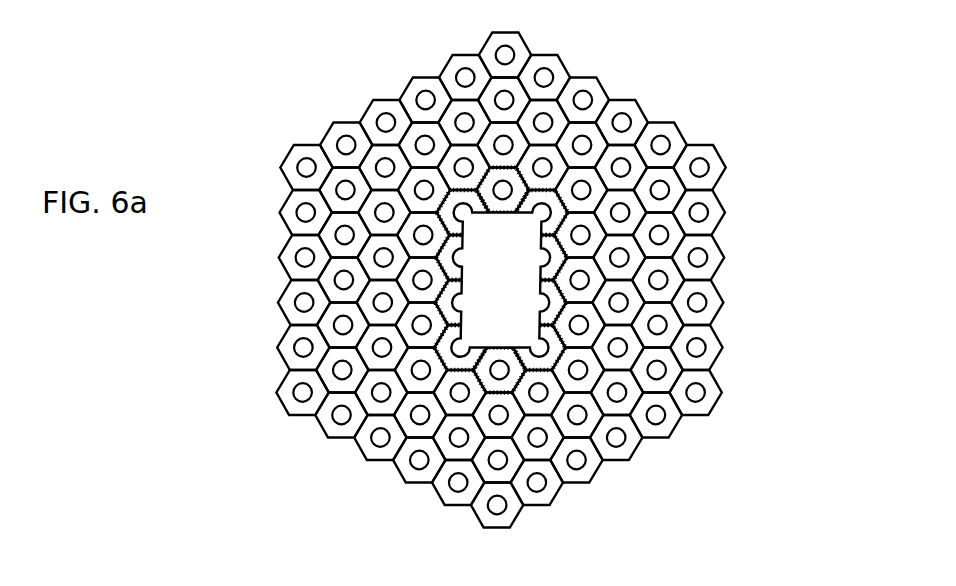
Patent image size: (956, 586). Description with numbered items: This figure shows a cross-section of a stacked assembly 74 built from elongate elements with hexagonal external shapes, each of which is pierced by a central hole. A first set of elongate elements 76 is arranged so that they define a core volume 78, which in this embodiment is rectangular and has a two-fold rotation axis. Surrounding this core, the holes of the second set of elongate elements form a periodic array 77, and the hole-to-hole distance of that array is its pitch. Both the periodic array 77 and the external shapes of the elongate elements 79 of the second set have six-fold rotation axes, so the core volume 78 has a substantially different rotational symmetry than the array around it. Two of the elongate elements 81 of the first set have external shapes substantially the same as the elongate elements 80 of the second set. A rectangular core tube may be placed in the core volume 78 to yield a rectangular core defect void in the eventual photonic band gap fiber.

The stacked assembly 74 is at (740, 98).
The first set of elongate elements 76 is at (440, 308).
The periodic array 77 is at (352, 102).
The core volume 78 is at (473, 327).
The elongate elements of the second set 79 is at (618, 474).
The elongate elements of the second set 80 is at (291, 282).
The elongate elements of the first set 81 is at (517, 196).